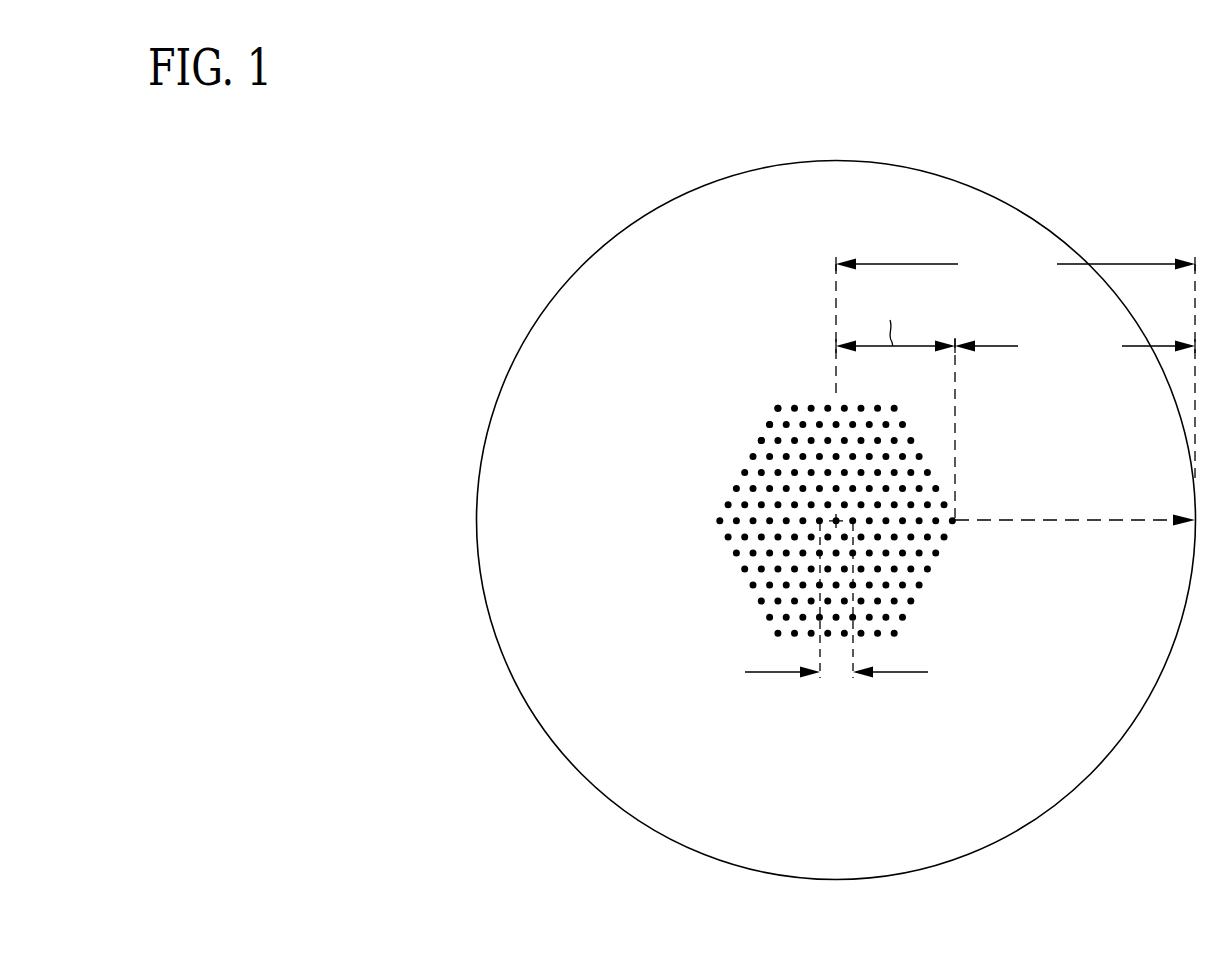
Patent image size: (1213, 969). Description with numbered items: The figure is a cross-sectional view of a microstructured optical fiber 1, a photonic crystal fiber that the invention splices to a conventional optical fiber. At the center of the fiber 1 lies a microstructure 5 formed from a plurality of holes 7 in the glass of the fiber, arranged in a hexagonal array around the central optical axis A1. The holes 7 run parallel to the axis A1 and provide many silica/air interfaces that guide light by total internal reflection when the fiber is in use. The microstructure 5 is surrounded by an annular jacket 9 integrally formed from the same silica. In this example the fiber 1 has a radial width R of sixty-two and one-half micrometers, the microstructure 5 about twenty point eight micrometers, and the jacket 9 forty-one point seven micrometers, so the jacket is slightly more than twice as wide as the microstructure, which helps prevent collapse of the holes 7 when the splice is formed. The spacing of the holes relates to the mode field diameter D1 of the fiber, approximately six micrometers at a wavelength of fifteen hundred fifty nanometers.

The microstructured optical fiber 1 is at (541, 236).
The microstructure 5 is at (722, 457).
The holes 7 is at (761, 440).
The annular jacket 9 is at (488, 618).
The central optical axis A1 is at (836, 520).
The mode field diameter D1 is at (837, 675).
The fiber radius R is at (1097, 522).